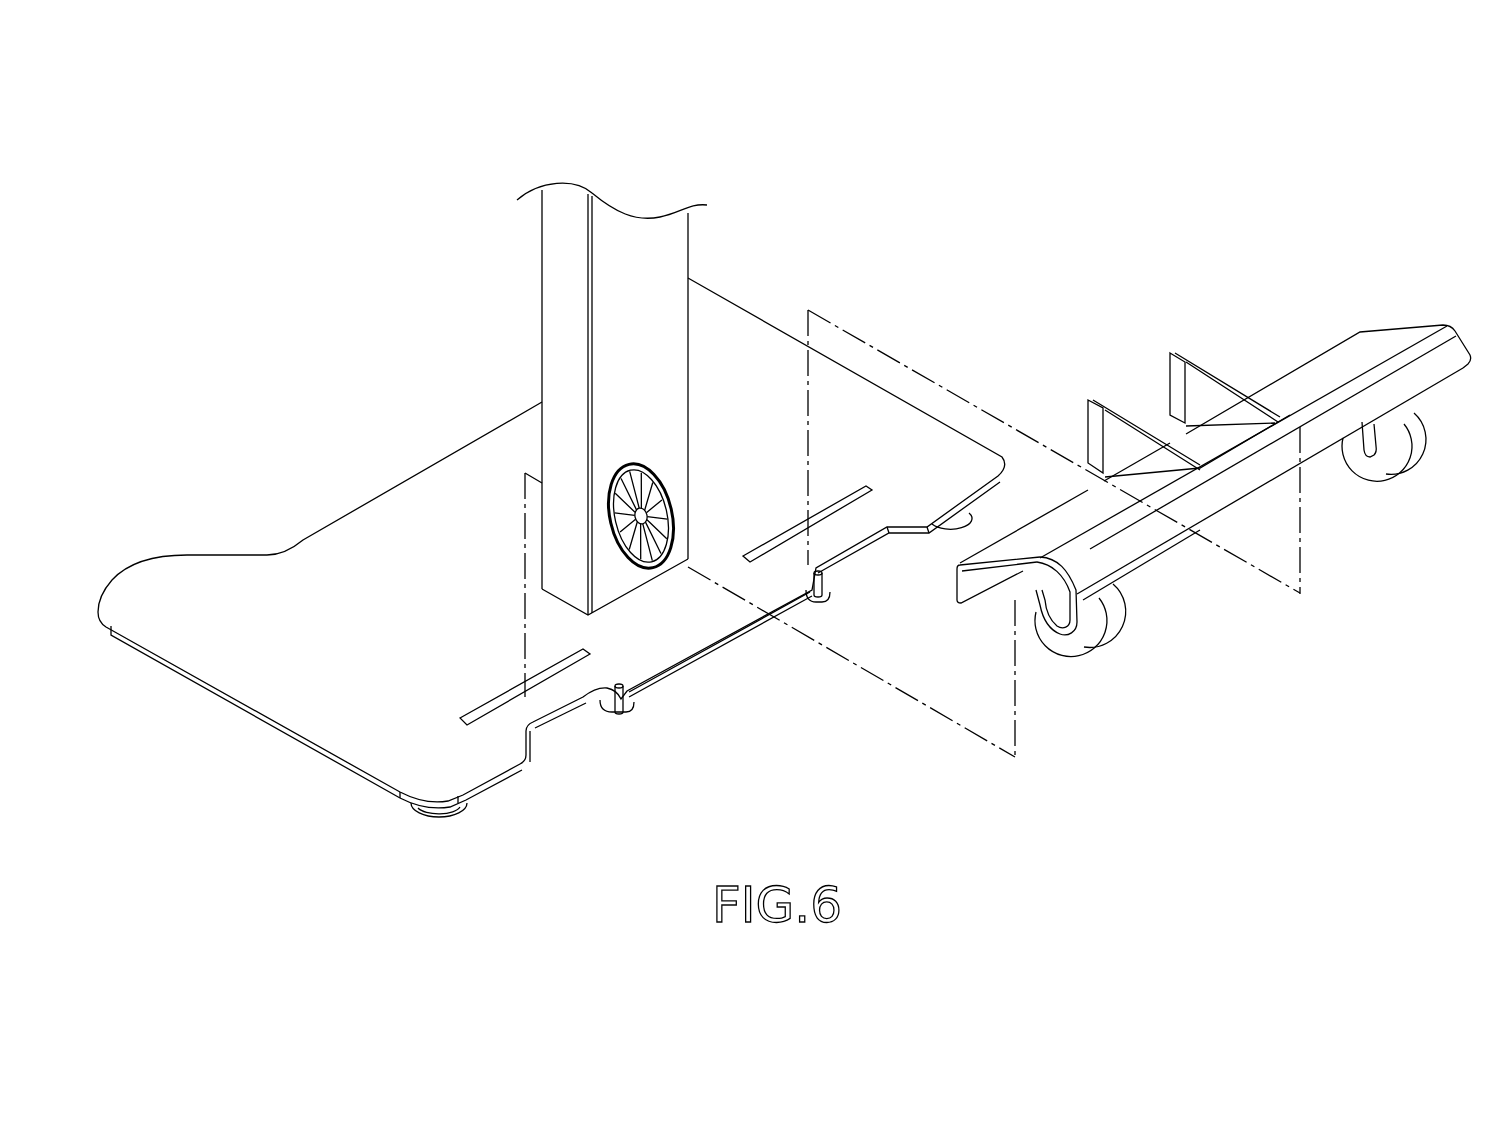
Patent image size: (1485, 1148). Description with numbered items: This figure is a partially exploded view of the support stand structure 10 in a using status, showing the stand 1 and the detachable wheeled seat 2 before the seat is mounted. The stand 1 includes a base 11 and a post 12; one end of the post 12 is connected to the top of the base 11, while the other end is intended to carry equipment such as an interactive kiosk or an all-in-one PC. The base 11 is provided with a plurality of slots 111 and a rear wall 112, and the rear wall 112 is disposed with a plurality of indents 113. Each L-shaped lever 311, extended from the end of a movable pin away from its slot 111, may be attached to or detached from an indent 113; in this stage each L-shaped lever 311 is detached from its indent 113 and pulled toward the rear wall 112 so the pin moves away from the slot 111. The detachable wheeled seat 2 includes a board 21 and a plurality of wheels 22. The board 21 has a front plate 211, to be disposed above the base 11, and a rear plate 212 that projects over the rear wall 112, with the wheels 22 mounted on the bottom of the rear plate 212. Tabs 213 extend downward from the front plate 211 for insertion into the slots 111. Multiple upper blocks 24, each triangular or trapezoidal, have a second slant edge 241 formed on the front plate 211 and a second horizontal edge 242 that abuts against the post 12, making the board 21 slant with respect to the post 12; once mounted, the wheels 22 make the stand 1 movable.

The support stand structure 10 is at (790, 105).
The stand 1 is at (525, 321).
The base 11 is at (372, 532).
The slots 111 is at (780, 533).
The rear wall 112 is at (700, 652).
The indents 113 is at (822, 600).
The L-shaped lever 311 is at (825, 588).
The post 12 is at (677, 265).
The detachable wheeled seat 2 is at (1250, 283).
The board 21 is at (1376, 330).
The front plate 211 is at (1340, 356).
The rear plate 212 is at (1105, 513).
The tabs 213 is at (982, 592).
The wheels 22 is at (1107, 655).
The upper block 24 is at (1092, 400).
The second slant edge 241 is at (1150, 440).
The second horizontal edge 242 is at (1088, 404).